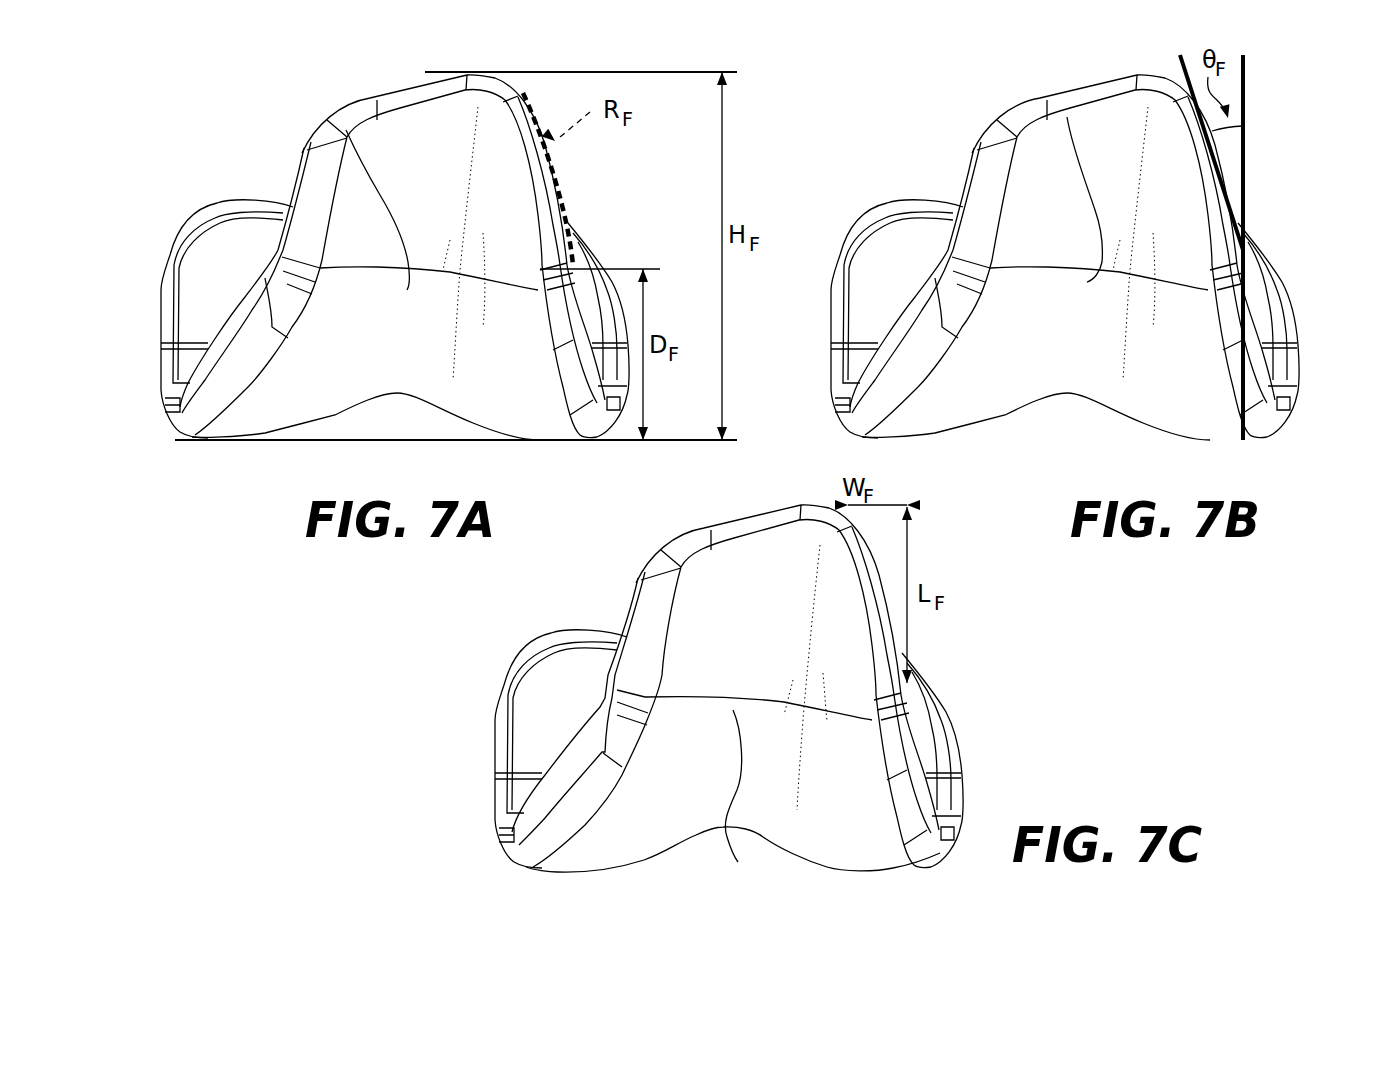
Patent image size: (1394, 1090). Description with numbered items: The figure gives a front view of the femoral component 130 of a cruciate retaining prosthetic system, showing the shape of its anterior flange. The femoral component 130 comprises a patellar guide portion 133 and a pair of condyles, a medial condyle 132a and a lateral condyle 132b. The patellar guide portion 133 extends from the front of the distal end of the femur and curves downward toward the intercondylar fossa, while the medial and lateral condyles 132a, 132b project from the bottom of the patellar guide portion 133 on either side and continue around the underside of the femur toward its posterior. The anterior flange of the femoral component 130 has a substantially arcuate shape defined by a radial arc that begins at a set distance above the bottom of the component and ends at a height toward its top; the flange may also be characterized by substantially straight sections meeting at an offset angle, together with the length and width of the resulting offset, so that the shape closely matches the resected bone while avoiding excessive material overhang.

In FIG. 7A, the femoral component 130 is at (250, 105).
In FIG. 7B, the femoral component 130 is at (1062, 240).
In FIG. 7C, the femoral component 130 is at (726, 686).
In FIG. 7A, the medial condyle 132a is at (190, 258).
In FIG. 7B, the medial condyle 132a is at (889, 285).
In FIG. 7C, the medial condyle 132a is at (516, 742).
In FIG. 7A, the lateral condyle 132b is at (596, 243).
In FIG. 7B, the lateral condyle 132b is at (1302, 305).
In FIG. 7C, the lateral condyle 132b is at (989, 760).
In FIG. 7A, the patellar guide portion 133 is at (346, 130).
In FIG. 7B, the patellar guide portion 133 is at (1090, 165).
In FIG. 7C, the patellar guide portion 133 is at (740, 804).